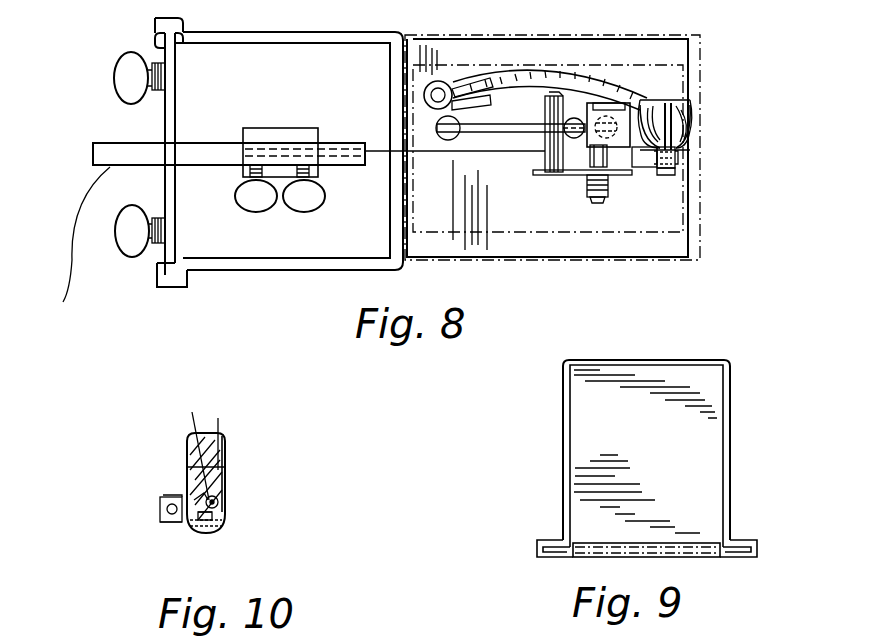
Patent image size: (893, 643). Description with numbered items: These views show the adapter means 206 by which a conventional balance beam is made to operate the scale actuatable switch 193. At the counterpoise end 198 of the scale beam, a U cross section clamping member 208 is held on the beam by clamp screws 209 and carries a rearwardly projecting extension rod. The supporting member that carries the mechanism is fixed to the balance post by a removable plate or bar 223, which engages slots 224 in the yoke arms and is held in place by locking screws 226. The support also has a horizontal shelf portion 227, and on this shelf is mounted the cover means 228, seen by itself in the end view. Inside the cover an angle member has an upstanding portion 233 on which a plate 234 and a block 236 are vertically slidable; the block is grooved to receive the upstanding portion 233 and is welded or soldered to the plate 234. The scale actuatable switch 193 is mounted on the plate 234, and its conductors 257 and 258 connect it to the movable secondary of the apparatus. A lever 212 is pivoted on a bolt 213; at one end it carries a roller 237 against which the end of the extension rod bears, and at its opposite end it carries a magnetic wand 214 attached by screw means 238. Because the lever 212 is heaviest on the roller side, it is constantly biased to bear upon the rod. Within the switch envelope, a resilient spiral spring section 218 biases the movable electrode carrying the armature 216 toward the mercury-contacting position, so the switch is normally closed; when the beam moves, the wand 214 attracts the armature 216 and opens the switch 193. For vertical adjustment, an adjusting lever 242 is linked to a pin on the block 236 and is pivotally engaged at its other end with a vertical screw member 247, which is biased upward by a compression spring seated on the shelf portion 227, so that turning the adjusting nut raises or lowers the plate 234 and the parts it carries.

In FIG. 8, the scale actuatable switch 193 is at (790, 99).
In FIG. 10, the scale actuatable switch 193 is at (230, 437).
In FIG. 8, the counterpoise end of scale beam 198 is at (112, 142).
In FIG. 8, the adapter means 206 is at (706, 35).
In FIG. 8, the U cross section clamping member 208 is at (300, 130).
In FIG. 8, the clamp screws 209 is at (311, 200).
In FIG. 8, the lever 212 is at (640, 176).
In FIG. 10, the lever 212 is at (141, 505).
In FIG. 8, the bolt 213 is at (590, 196).
In FIG. 8, the magnetic wand 214 is at (670, 170).
In FIG. 10, the magnetic wand 214 is at (170, 523).
In FIG. 10, the armature 216 is at (212, 518).
In FIG. 10, the resilient spiral spring section 218 is at (217, 503).
In FIG. 8, the removable plate or bar 223 is at (172, 185).
In FIG. 8, the slots 224 is at (170, 33).
In FIG. 8, the locking screws 226 is at (130, 62).
In FIG. 9, the shelf portion 227 is at (548, 547).
In FIG. 9, the cover means 228 is at (730, 400).
In FIG. 8, the upstanding portion 233 is at (600, 105).
In FIG. 8, the plate 234 is at (666, 100).
In FIG. 8, the block 236 is at (620, 156).
In FIG. 8, the roller 237 is at (540, 171).
In FIG. 8, the screw means 238 is at (678, 155).
In FIG. 10, the screw means 238 is at (166, 511).
In FIG. 8, the adjusting lever 242 is at (518, 126).
In FIG. 8, the vertical screw member 247 is at (447, 140).
In FIG. 8, the conductor 257 is at (522, 82).
In FIG. 10, the conductor 257 is at (225, 418).
In FIG. 8, the conductor 258 is at (553, 92).
In FIG. 10, the conductor 258 is at (185, 415).